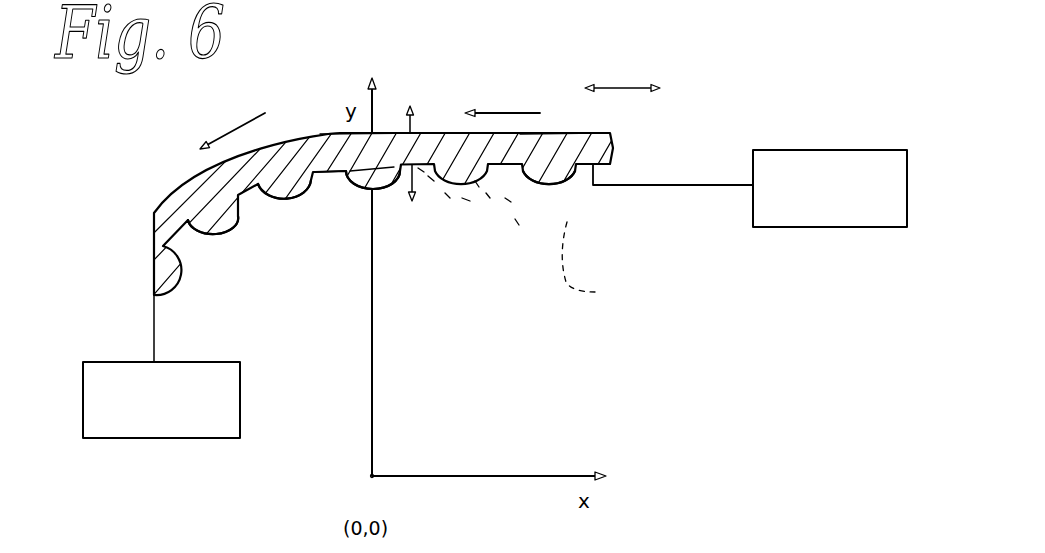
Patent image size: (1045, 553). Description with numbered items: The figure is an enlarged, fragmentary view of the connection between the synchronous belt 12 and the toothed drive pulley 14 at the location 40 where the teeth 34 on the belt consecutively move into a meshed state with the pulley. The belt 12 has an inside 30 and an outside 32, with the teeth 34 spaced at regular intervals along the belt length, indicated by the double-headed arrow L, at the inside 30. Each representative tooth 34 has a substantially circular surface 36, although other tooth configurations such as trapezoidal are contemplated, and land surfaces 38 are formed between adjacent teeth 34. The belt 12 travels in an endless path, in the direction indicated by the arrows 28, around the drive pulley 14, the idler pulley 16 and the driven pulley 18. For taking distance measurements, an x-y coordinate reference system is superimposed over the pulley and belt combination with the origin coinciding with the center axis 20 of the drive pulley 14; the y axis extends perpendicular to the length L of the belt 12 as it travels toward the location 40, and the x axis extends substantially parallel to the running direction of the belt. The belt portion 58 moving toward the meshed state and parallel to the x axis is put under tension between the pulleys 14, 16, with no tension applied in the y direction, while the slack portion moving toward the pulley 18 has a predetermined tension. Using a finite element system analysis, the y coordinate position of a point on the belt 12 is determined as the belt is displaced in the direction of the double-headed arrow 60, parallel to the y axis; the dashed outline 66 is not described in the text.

The synchronous belt 12 is at (621, 148).
The toothed drive pulley 14 is at (535, 392).
The toothed idler pulley 16 is at (820, 214).
The toothed driven pulley 18 is at (150, 427).
The center axis 20 is at (373, 477).
The arrows 28 is at (237, 128).
The inside 30 is at (292, 208).
The outside 32 is at (305, 134).
The teeth 34 is at (183, 222).
The circular surface 36 is at (368, 189).
The land surfaces 38 is at (503, 168).
The meshing location 40 is at (345, 190).
The belt portion 58 is at (553, 124).
The double-headed arrow 60 is at (417, 130).
The phantom tooth position 66 is at (573, 267).
The belt length L is at (613, 88).